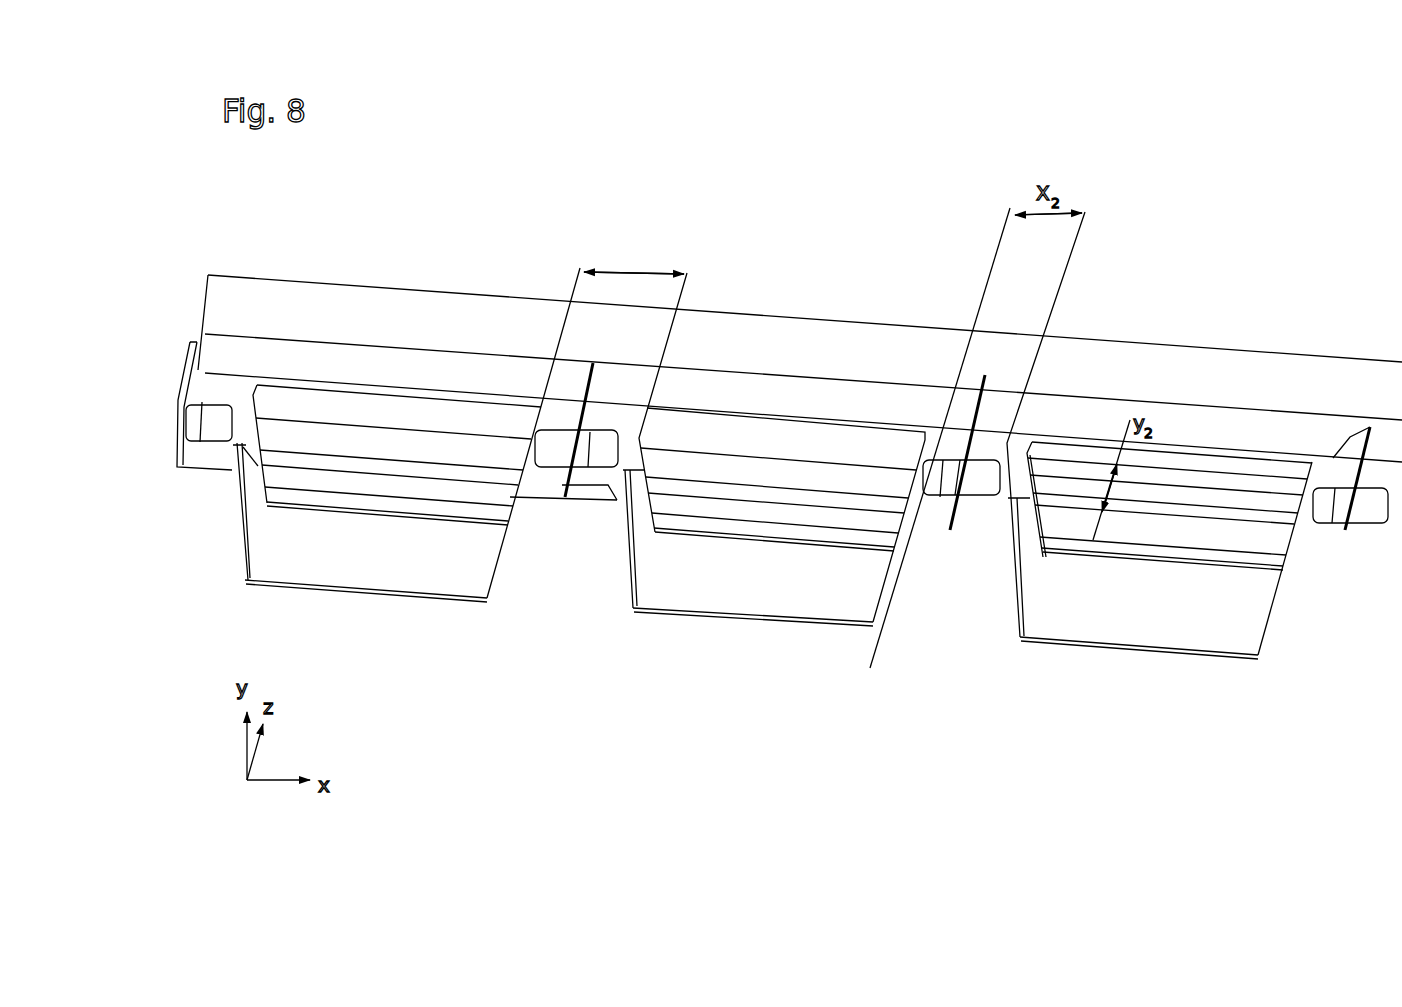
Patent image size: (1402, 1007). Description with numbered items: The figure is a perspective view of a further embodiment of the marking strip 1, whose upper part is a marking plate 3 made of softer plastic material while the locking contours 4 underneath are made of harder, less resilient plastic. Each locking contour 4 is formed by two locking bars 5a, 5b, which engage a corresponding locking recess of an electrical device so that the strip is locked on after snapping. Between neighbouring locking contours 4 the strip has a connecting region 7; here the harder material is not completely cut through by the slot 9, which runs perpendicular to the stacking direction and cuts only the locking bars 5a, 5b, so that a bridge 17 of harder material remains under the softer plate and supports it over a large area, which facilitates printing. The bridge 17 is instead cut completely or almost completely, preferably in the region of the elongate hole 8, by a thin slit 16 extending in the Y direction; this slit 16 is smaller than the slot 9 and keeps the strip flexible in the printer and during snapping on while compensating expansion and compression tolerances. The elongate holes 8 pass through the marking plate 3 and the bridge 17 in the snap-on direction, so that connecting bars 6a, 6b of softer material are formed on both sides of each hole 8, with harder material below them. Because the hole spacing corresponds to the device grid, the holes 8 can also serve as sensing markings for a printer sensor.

The marking strip 1 is at (1093, 197).
The marking plate 3 is at (362, 322).
The locking contour 4 is at (1350, 437).
The locking bar 5a is at (240, 545).
The locking bar 5b is at (254, 455).
The connecting bar 6a is at (593, 492).
The connecting bar 6b is at (220, 388).
The connecting region 7 is at (603, 322).
The elongate hole 8 is at (198, 450).
The slot 9 is at (512, 575).
The slit 16 is at (985, 375).
The bridge 17 is at (899, 577).